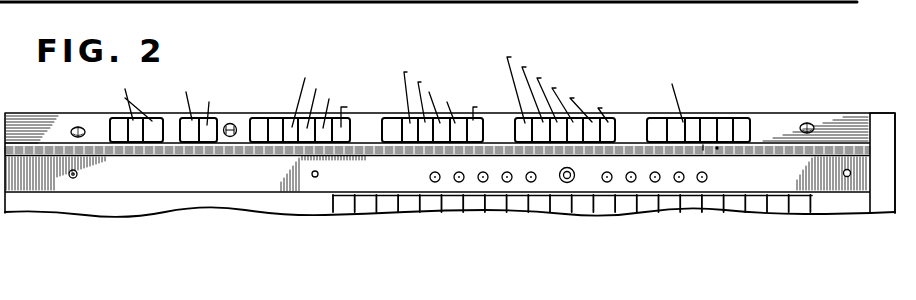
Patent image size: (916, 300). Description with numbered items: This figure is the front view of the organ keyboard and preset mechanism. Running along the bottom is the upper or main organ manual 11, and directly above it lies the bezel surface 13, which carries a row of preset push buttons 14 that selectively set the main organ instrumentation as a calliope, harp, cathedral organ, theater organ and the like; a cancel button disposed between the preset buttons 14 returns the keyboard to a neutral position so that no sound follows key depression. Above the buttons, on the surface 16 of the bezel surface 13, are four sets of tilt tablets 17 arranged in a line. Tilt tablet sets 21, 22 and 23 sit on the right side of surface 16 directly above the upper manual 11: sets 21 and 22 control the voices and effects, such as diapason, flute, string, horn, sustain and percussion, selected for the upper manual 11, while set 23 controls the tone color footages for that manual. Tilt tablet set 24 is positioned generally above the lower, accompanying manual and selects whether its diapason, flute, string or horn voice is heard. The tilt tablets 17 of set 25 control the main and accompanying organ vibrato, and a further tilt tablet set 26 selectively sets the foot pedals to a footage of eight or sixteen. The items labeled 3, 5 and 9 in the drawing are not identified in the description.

The console cabinet 3 is at (856, 2).
The stop switch rail 5 is at (717, 107).
The cancel button 9 is at (567, 160).
The upper or main organ manual 11 is at (775, 207).
The bezel surface 13 is at (807, 175).
The preset push buttons 14 is at (433, 182).
The surface 16 is at (838, 128).
The tilt tablets 17 is at (730, 121).
The tilt tablet set 21 is at (404, 114).
The tilt tablet set 22 is at (517, 114).
The tilt tablet set 23 is at (692, 121).
The tilt tablet set 24 is at (283, 114).
The tilt tablet set 25 is at (184, 115).
The tilt tablet set 26 is at (149, 100).